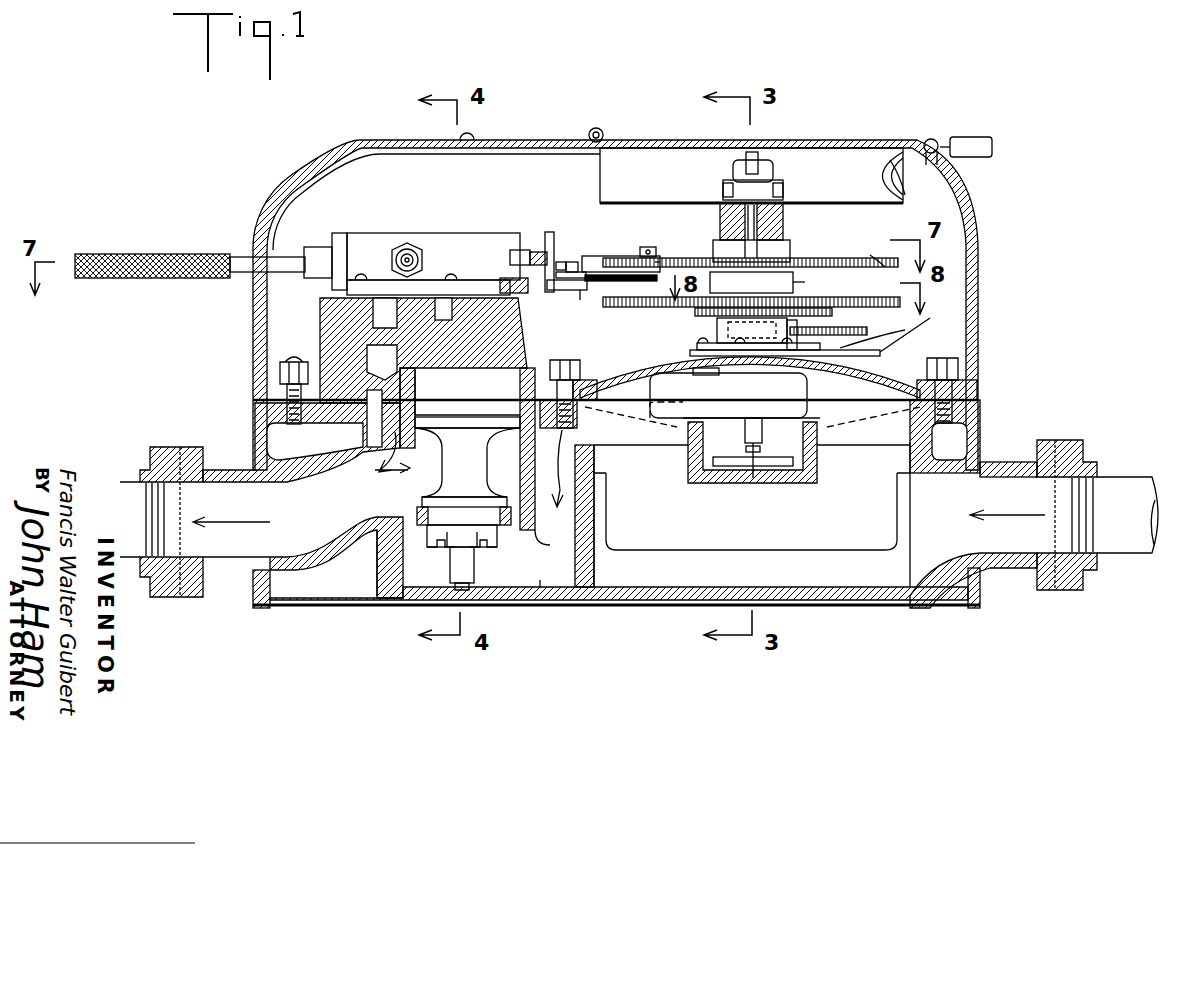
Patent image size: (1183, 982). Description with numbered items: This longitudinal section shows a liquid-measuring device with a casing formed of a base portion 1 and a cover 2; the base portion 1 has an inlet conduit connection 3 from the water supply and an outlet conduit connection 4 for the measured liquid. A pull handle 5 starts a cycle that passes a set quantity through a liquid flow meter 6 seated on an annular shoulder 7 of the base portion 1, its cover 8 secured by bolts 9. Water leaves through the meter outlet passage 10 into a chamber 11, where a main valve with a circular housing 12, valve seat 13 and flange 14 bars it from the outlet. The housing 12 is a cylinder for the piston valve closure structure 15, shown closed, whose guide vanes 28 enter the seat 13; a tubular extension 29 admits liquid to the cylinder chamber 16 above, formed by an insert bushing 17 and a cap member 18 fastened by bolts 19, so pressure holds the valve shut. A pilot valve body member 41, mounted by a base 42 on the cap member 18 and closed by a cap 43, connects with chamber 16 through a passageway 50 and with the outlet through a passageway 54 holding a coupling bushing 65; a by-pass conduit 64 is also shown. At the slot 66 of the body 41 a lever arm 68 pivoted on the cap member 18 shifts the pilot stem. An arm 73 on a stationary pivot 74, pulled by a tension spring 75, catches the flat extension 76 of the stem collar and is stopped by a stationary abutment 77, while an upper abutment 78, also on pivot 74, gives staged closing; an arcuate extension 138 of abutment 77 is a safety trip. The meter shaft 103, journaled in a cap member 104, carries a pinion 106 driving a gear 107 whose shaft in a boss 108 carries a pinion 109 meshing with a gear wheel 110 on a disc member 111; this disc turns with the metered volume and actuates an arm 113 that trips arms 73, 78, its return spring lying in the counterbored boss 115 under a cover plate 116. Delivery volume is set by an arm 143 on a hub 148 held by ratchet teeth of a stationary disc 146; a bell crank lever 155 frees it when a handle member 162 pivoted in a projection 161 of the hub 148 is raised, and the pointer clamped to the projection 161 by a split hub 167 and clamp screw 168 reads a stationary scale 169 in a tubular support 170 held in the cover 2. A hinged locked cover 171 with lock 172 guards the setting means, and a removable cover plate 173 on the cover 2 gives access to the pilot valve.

The meter body 1 is at (400, 590).
The cover 2 is at (980, 258).
The outlet 3 is at (1010, 470).
The inlet 4 is at (215, 560).
The adjusting spindle 5 is at (215, 252).
The measuring chamber 6 is at (756, 532).
The chamber support 7 is at (900, 470).
The diaphragm dome 8 is at (925, 345).
The flange bolt 9 is at (566, 360).
The passage 10 is at (551, 487).
The passage 11 is at (520, 608).
The passage 12 is at (560, 548).
The valve seat 13 is at (418, 512).
The valve pocket wall 14 is at (377, 570).
The valve plunger 15 is at (447, 462).
The cylinder bore 16 is at (481, 395).
The cylinder 17 is at (404, 385).
The body block 18 is at (525, 330).
The bolt 19 is at (280, 370).
The valve body 28 is at (445, 548).
The valve stem 29 is at (474, 565).
The housing 41 is at (460, 235).
The plate 42 is at (448, 280).
The bushing 43 is at (338, 240).
The slot 50 is at (375, 318).
The pocket 54 is at (365, 357).
The nut 64 is at (405, 245).
The passage 65 is at (367, 440).
The bracket 66 is at (520, 248).
The spring 68 is at (548, 240).
The plate 73 is at (605, 282).
The pin 74 is at (658, 262).
The pivot 75 is at (560, 262).
The link 76 is at (542, 296).
The lever 77 is at (590, 258).
The bracket 78 is at (646, 247).
The plate 103 is at (690, 350).
The block 104 is at (717, 328).
The diaphragm plate 106 is at (805, 375).
The rack 107 is at (867, 331).
The link 108 is at (924, 328).
The rack 109 is at (845, 300).
The rack 110 is at (700, 312).
The link 111 is at (915, 302).
The block 113 is at (745, 288).
The block 115 is at (815, 284).
The rack 116 is at (760, 270).
The link 138 is at (580, 300).
The shaft 143 is at (720, 250).
The spring 146 is at (875, 262).
The block 148 is at (780, 242).
The bearing 155 is at (722, 205).
The block 161 is at (733, 170).
The post 162 is at (745, 158).
The nut 167 is at (775, 185).
The nut 168 is at (783, 190).
The drum 169 is at (898, 150).
The loop 170 is at (931, 139).
The register 171 is at (808, 138).
The cap 172 is at (992, 145).
The eye 173 is at (520, 140).